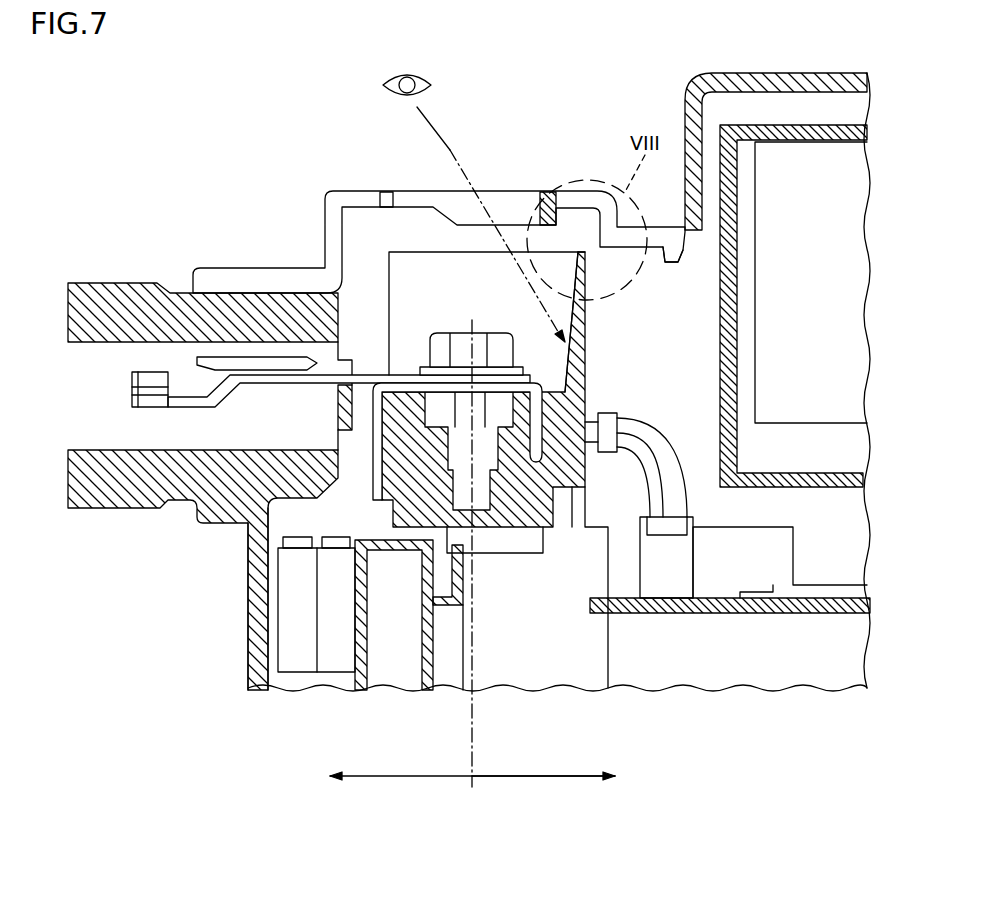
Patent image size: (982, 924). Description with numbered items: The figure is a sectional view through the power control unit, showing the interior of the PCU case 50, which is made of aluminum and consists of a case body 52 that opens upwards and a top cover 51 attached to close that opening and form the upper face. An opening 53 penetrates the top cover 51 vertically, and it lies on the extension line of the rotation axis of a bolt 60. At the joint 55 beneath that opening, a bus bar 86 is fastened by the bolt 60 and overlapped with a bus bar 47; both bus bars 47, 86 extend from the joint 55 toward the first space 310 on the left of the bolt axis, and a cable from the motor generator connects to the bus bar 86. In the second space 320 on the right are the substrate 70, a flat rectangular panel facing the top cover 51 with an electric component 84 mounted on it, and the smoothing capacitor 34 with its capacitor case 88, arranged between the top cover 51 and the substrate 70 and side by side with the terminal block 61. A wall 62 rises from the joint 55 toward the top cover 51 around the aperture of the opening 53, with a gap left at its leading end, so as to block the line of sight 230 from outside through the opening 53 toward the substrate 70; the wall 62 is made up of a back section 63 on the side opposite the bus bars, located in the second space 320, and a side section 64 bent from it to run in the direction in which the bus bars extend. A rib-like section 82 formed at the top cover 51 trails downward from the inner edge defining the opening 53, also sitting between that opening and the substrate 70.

The smoothing capacitor 34 is at (811, 118).
The bus bar 47 is at (334, 280).
The PCU case 50 is at (245, 636).
The top cover 51 is at (763, 72).
The case body 52 is at (247, 590).
The opening 53 is at (390, 196).
The joint 55 is at (517, 490).
The bolt 60 is at (405, 385).
The terminal block 61 is at (572, 512).
The wall 62 is at (586, 240).
The back section 63 is at (640, 255).
The side section 64 is at (453, 263).
The substrate 70 is at (835, 607).
The rib-like section 82 is at (538, 218).
The electric component 84 is at (722, 568).
The bus bar 86 is at (327, 377).
The capacitor case 88 is at (807, 480).
The line of sight 230 is at (458, 140).
The first space 310 is at (472, 766).
The second space 320 is at (543, 764).